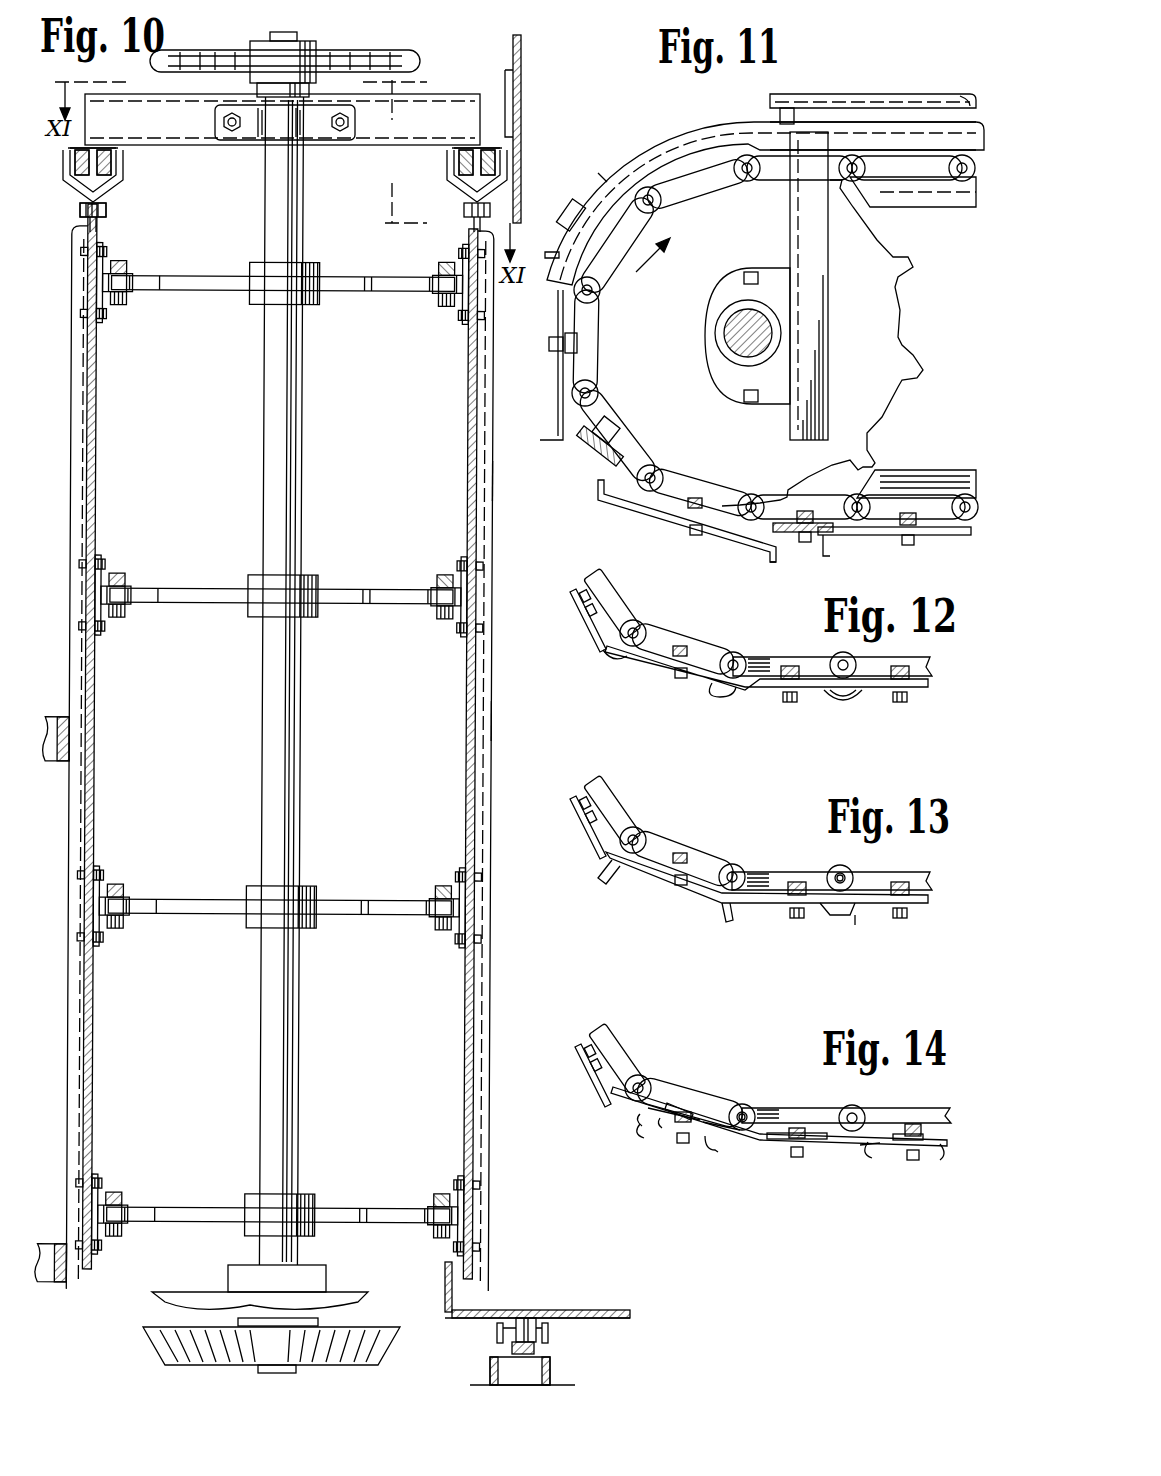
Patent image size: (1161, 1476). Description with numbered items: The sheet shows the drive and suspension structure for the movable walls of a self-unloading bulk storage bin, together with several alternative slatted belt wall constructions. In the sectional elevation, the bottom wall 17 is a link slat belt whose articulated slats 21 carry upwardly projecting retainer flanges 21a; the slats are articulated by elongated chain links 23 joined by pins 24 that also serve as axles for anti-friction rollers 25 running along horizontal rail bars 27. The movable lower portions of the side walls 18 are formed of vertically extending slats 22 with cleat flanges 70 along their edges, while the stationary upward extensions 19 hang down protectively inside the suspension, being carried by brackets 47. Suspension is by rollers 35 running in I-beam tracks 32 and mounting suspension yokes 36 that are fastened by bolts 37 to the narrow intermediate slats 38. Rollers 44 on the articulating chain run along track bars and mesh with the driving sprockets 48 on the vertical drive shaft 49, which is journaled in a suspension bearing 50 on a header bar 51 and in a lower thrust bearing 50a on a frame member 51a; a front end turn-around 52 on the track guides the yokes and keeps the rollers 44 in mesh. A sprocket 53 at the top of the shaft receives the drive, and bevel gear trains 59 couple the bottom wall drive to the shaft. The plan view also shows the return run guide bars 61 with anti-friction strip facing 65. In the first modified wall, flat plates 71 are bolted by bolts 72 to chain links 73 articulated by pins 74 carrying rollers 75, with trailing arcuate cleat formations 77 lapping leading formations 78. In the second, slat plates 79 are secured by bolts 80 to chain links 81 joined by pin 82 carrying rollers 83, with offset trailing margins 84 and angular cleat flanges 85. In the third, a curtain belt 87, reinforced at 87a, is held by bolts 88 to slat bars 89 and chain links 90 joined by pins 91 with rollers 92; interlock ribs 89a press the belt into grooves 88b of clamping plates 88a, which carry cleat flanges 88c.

In FIG. 10, the bottom wall 17 is at (554, 1304).
In FIG. 10, the side walls 18 is at (500, 470).
In FIG. 10, the side wall upward extensions 19 is at (521, 60).
In FIG. 10, the bottom wall slats 21 is at (604, 1308).
In FIG. 10, the retainer flanges 21a is at (444, 1280).
In FIG. 10, the side wall slats 22 is at (92, 472).
In FIG. 11, the side wall slats 22 is at (700, 538).
In FIG. 10, the chain links 23 is at (522, 1318).
In FIG. 10, the pins 24 is at (497, 1334).
In FIG. 10, the anti-friction rollers 25 is at (534, 1346).
In FIG. 10, the rail bars 27 is at (488, 1364).
In FIG. 10, the suspension tracks 32 is at (90, 150).
In FIG. 11, the suspension tracks 32 is at (860, 125).
In FIG. 10, the rollers 35 is at (100, 162).
In FIG. 10, the suspension yokes 36 is at (115, 183).
In FIG. 11, the suspension yokes 36 is at (573, 205).
In FIG. 10, the bolts 37 is at (86, 218).
In FIG. 11, the intermediate slats 38 is at (793, 544).
In FIG. 10, the rollers 44 is at (106, 279).
In FIG. 10, the brackets 47 is at (511, 116).
In FIG. 10, the driving sprockets 48 is at (374, 288).
In FIG. 11, the driving sprockets 48 is at (900, 348).
In FIG. 10, the vertical drive shaft 49 is at (268, 473).
In FIG. 11, the vertical drive shaft 49 is at (736, 354).
In FIG. 10, the suspension bearing 50 is at (275, 135).
In FIG. 11, the suspension bearing 50 is at (716, 328).
In FIG. 10, the thrust bearing 50a is at (234, 1278).
In FIG. 10, the header bar 51 is at (430, 100).
In FIG. 11, the header bar 51 is at (790, 240).
In FIG. 10, the frame member 51a is at (180, 1297).
In FIG. 11, the front end turn-around 52 is at (652, 160).
In FIG. 10, the sprocket 53 is at (323, 60).
In FIG. 10, the bevel gear trains 59 is at (148, 1352).
In FIG. 11, the guide bars 61 is at (883, 100).
In FIG. 11, the anti-friction strip facing 65 is at (935, 104).
In FIG. 10, the cleat flanges 70 is at (493, 730).
In FIG. 11, the cleat flanges 70 is at (772, 563).
In FIG. 12, the flat plates 71 is at (767, 693).
In FIG. 12, the bolts 72 is at (792, 668).
In FIG. 12, the chain links 73 is at (775, 660).
In FIG. 12, the pins 74 is at (724, 654).
In FIG. 12, the rollers 75 is at (730, 668).
In FIG. 12, the trailing edge arcuate cleat flange formations 77 is at (855, 695).
In FIG. 12, the leading edge arcuate formations 78 is at (834, 695).
In FIG. 13, the slat plates 79 is at (768, 903).
In FIG. 13, the bolts 80 is at (754, 872).
In FIG. 13, the chain links 81 is at (795, 865).
In FIG. 13, the pin 82 is at (842, 878).
In FIG. 13, the rollers 83 is at (840, 870).
In FIG. 13, the trailing marginal portions 84 is at (831, 915).
In FIG. 13, the angular cleat flanges 85 is at (855, 917).
In FIG. 14, the endless belt 87 is at (748, 1142).
In FIG. 14, the reinforcement 87a is at (636, 1070).
In FIG. 14, the bolts 88 is at (679, 1150).
In FIG. 14, the clamping plate 88a is at (666, 1132).
In FIG. 14, the grooves 88b is at (642, 1134).
In FIG. 14, the cleat flanges 88c is at (650, 1123).
In FIG. 14, the slat bars 89 is at (675, 1105).
In FIG. 14, the interlock ribs 89a is at (665, 1105).
In FIG. 14, the chain links 90 is at (800, 1108).
In FIG. 14, the pins 91 is at (736, 1109).
In FIG. 14, the rollers 92 is at (748, 1109).